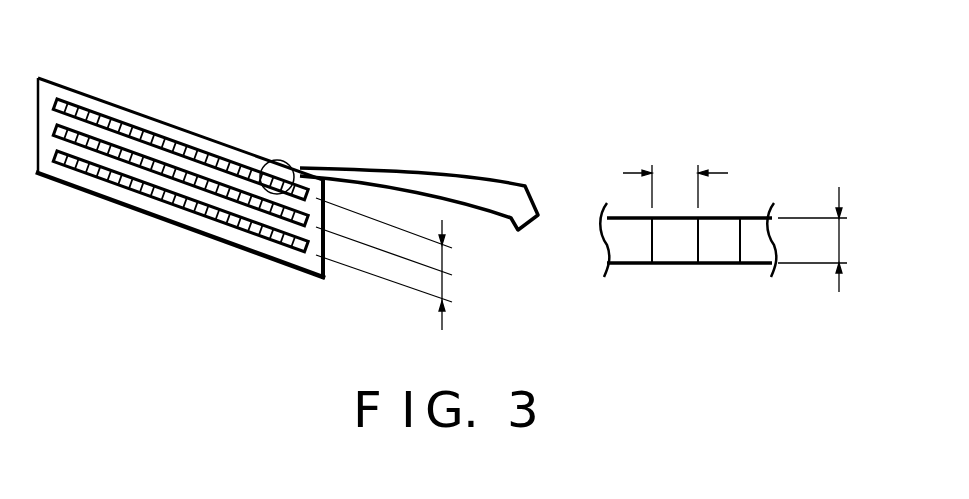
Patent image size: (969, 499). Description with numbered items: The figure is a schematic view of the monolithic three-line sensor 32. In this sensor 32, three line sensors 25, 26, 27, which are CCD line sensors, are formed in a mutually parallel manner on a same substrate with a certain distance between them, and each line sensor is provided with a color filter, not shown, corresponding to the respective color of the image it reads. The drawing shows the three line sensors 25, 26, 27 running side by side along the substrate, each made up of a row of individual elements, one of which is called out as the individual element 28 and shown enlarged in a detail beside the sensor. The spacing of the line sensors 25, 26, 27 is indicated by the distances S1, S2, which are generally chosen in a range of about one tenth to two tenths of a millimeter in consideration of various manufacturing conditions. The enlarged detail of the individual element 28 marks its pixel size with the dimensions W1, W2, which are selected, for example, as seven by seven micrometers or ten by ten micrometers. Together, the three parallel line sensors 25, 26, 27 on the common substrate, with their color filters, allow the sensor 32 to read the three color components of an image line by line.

The monolithic 3-line sensor 32 is at (67, 88).
The line sensor 25 is at (110, 117).
The line sensor 26 is at (170, 167).
The line sensor 27 is at (130, 188).
The individual element 28 is at (290, 166).
The distance S1 is at (404, 264).
The distance S2 is at (404, 289).
The pixel size W1 is at (675, 174).
The pixel size W2 is at (831, 239).